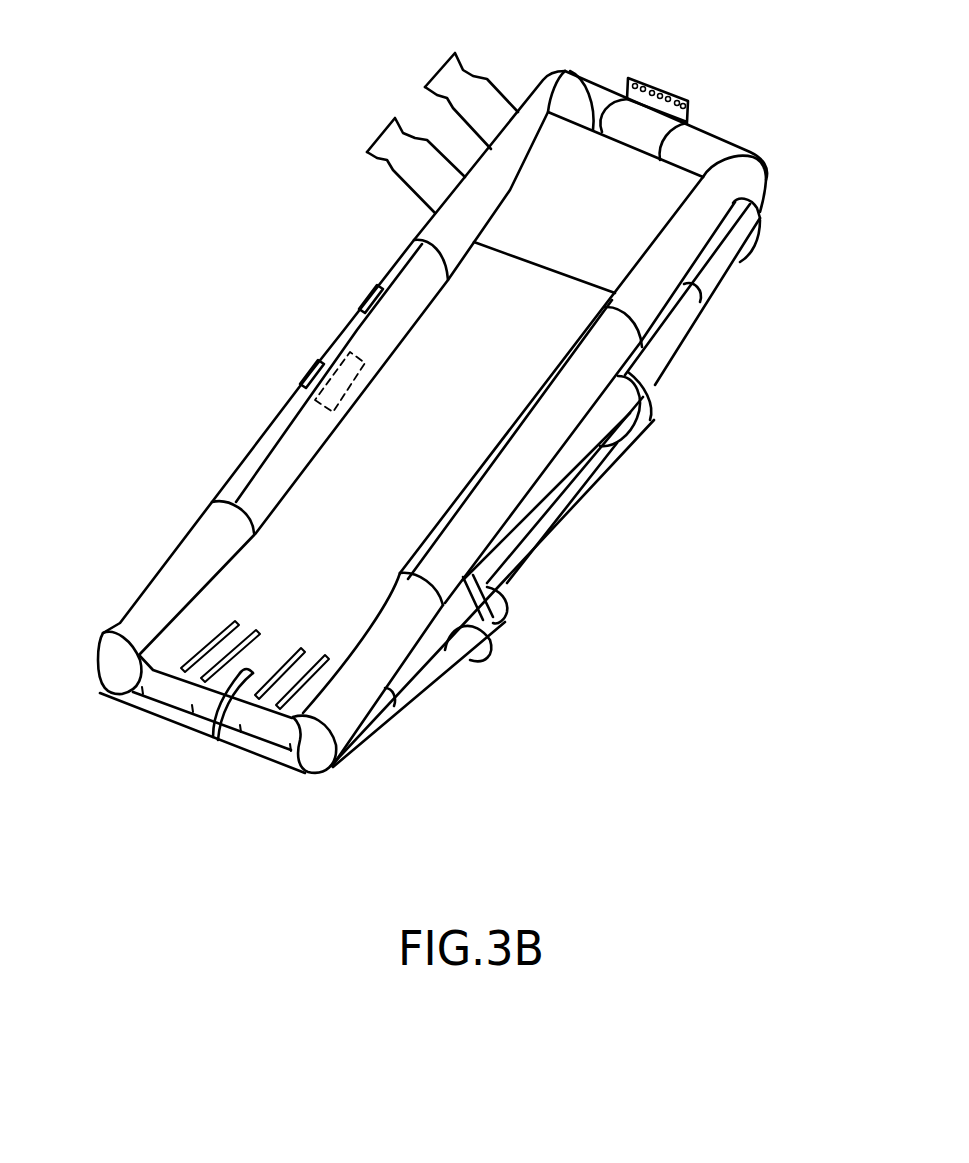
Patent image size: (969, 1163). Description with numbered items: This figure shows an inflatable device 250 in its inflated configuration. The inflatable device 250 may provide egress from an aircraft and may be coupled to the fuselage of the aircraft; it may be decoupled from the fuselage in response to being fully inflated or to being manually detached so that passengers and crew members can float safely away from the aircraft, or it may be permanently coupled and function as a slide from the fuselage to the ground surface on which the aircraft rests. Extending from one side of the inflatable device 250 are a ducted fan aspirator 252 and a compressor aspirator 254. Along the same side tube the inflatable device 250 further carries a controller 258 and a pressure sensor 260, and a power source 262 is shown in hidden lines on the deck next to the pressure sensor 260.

The inflatable device 250 is at (160, 375).
The ducted fan aspirator 252 is at (385, 142).
The compressor aspirator 254 is at (443, 78).
The controller 258 is at (367, 300).
The pressure sensor 260 is at (307, 368).
The power source 262 is at (372, 353).